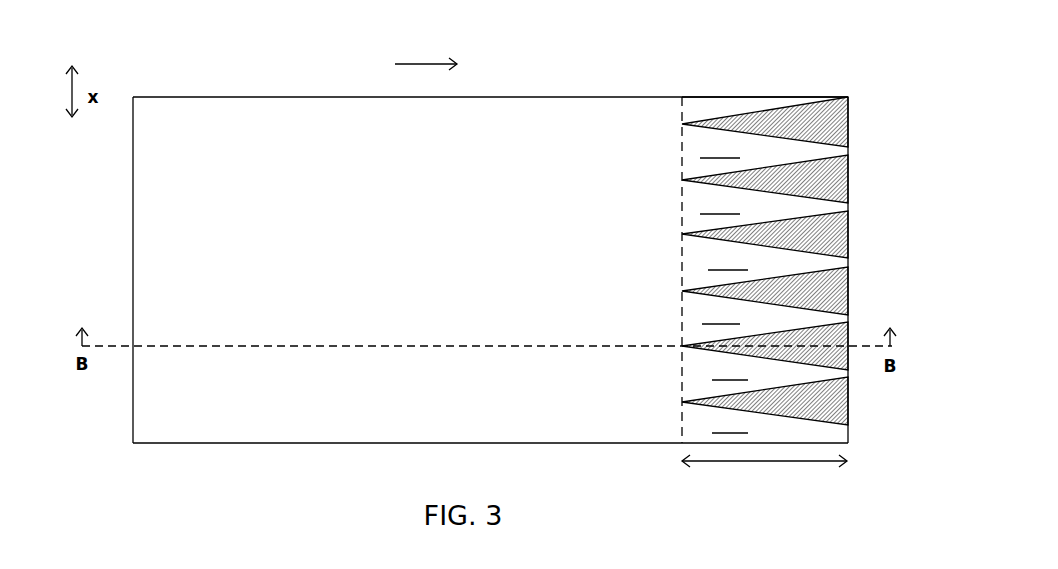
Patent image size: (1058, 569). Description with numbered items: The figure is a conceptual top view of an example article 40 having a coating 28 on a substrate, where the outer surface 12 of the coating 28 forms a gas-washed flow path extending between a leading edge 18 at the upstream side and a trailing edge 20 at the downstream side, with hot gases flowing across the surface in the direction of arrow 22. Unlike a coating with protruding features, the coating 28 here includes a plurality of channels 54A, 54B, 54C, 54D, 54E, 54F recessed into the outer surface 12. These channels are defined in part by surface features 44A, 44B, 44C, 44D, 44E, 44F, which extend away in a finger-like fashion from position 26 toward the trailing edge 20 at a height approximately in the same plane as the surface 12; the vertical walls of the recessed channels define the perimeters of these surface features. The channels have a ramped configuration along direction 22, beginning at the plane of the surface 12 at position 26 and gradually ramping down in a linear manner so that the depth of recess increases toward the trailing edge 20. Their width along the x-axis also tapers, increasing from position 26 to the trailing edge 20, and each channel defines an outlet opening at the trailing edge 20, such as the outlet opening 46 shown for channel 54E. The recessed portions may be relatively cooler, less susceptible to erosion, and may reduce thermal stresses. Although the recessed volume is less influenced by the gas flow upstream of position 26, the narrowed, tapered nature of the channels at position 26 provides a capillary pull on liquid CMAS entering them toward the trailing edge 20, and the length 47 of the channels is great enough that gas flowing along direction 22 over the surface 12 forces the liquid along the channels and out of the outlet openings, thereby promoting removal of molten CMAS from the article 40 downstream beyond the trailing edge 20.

The outer surface 12 is at (302, 415).
The leading edge 18 is at (108, 274).
The trailing edge 20 is at (877, 87).
The direction of gas flow 22 is at (426, 52).
The position 26 is at (682, 402).
The coating 28 is at (402, 268).
The article 40 is at (684, 50).
The surface feature 44A is at (720, 150).
The surface feature 44B is at (720, 206).
The surface feature 44C is at (728, 262).
The surface feature 44D is at (721, 316).
The surface feature 44E is at (729, 372).
The surface feature 44F is at (730, 425).
The outlet opening 46 is at (852, 338).
The length 47 is at (764, 471).
The channel 54A is at (825, 134).
The channel 54B is at (832, 189).
The channel 54C is at (835, 244).
The channel 54D is at (802, 299).
The channel 54E is at (803, 354).
The channel 54F is at (840, 409).